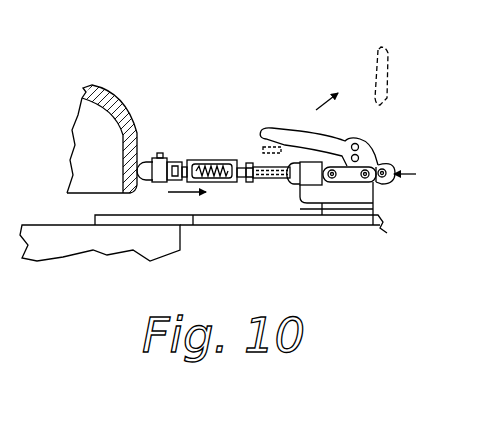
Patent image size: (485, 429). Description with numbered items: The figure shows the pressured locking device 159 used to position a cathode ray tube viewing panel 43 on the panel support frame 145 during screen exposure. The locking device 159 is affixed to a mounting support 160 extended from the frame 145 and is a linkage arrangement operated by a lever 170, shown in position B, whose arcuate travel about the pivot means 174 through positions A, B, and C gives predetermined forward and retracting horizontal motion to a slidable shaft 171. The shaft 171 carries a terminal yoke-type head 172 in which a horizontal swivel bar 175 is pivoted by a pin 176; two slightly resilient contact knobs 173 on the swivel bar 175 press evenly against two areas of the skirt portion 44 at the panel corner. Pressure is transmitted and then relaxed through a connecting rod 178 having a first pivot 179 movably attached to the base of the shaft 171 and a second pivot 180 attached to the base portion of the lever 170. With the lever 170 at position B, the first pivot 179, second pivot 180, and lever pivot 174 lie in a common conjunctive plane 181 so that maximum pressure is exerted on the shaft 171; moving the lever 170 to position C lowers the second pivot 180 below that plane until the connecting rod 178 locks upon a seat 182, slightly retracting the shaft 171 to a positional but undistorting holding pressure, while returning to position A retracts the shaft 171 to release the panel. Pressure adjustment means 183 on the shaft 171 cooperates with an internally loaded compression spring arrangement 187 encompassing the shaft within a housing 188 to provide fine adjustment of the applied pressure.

The cathode ray tube viewing panel 43 is at (100, 93).
The skirt portion 44 is at (125, 149).
The frame 145 is at (70, 225).
The pressured locking device 159 is at (259, 96).
The mounting support 160 is at (229, 231).
The lever 170 is at (279, 129).
The slidable shaft 171 is at (284, 182).
The yoke-type head 172 is at (173, 152).
The contact knobs 173 is at (143, 162).
The pivot means 174 is at (384, 168).
The horizontal swivel bar 175 is at (158, 181).
The pin 176 is at (161, 153).
The connecting rod 178 is at (346, 178).
The first pivot 179 is at (330, 178).
The second pivot 180 is at (377, 184).
The conjunctive plane 181 is at (427, 160).
The seat 182 is at (366, 179).
The pressure adjustment means 183 is at (249, 182).
The compression spring arrangement 187 is at (218, 178).
The housing 188 is at (203, 159).